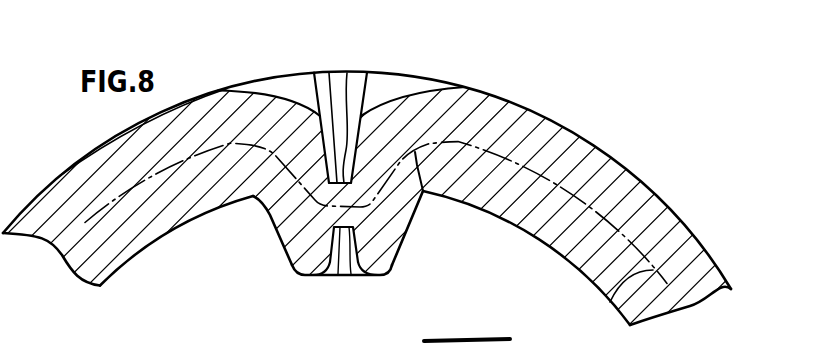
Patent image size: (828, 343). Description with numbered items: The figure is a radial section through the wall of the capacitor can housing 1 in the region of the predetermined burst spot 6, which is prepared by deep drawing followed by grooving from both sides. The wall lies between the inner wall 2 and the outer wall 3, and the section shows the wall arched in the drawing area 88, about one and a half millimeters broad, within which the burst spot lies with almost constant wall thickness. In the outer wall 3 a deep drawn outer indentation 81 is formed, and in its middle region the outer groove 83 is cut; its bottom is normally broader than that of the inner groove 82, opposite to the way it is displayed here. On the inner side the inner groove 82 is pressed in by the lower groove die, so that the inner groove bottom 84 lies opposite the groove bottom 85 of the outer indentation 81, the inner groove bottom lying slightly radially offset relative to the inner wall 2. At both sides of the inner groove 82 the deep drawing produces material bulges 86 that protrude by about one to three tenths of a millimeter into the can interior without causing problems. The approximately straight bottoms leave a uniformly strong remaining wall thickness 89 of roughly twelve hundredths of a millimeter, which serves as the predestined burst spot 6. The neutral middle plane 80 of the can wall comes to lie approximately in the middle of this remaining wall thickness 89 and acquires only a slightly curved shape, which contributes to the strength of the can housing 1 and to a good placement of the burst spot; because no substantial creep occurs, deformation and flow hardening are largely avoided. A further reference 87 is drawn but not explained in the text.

The can housing 1 is at (643, 197).
The inner wall 2 is at (573, 267).
The outer wall 3 is at (565, 127).
The predetermined burst spot 6 is at (347, 215).
The neutral middle plane 80 is at (427, 197).
The outer indentation 81 is at (300, 91).
The inner groove 82 is at (349, 268).
The outer groove 83 is at (345, 108).
The inner groove bottom 84 is at (327, 270).
The groove bottom 85 is at (340, 73).
The bulges 86 is at (378, 250).
The boss bottom surface 87 is at (315, 277).
The drawing area 88 is at (448, 177).
The remaining wall thickness 89 is at (323, 204).